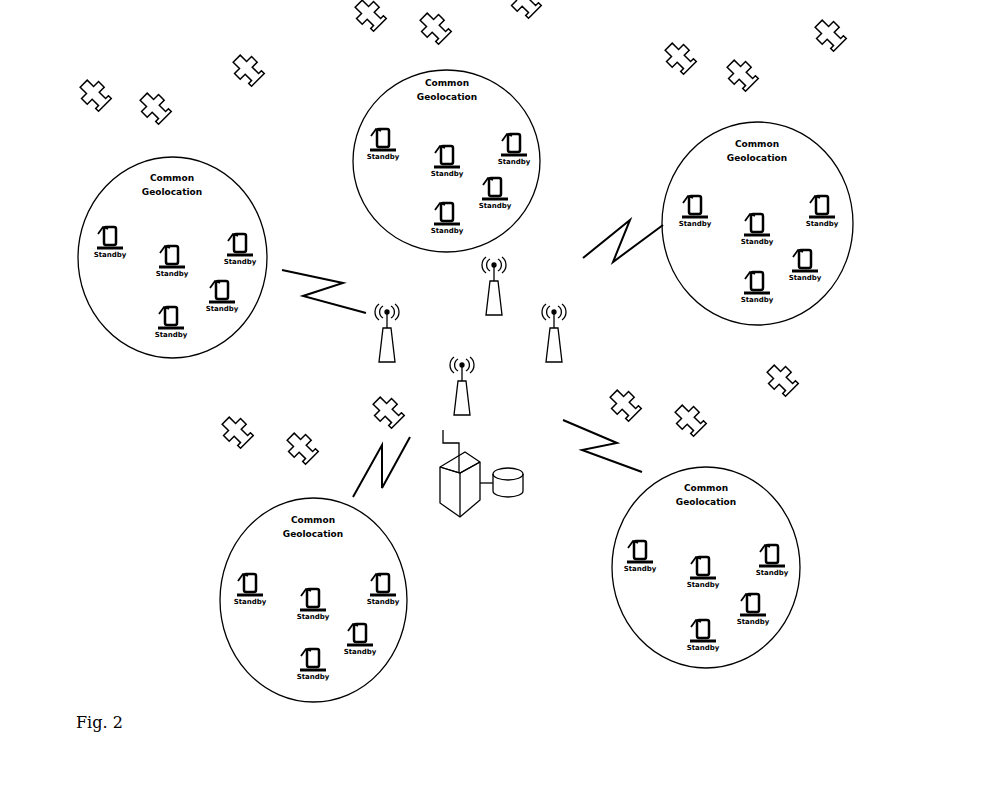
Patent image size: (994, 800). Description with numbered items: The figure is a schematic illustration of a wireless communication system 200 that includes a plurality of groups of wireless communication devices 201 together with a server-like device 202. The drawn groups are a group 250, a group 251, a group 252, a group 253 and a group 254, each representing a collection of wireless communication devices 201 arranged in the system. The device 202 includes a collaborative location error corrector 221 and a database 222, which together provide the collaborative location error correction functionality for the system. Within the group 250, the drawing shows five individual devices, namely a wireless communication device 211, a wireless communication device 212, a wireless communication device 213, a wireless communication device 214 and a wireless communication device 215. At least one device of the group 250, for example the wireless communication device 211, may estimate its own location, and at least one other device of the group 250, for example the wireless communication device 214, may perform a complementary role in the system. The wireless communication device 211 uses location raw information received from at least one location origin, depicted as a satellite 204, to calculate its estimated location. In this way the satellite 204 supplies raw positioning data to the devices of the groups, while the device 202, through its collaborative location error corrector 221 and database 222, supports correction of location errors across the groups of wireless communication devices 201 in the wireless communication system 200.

The wireless communication system 200 is at (92, 594).
The wireless communication devices 201 is at (94, 233).
The device 202 is at (459, 518).
The satellite 204 is at (215, 430).
The wireless communication device 211 is at (238, 582).
The wireless communication device 212 is at (396, 584).
The wireless communication device 213 is at (377, 636).
The wireless communication device 214 is at (322, 682).
The wireless communication device 215 is at (313, 582).
The collaborative location error corrector 221 is at (440, 497).
The database 222 is at (513, 518).
The group 250 is at (240, 665).
The group 251 is at (100, 323).
The group 252 is at (372, 108).
The group 253 is at (735, 125).
The group 254 is at (795, 543).